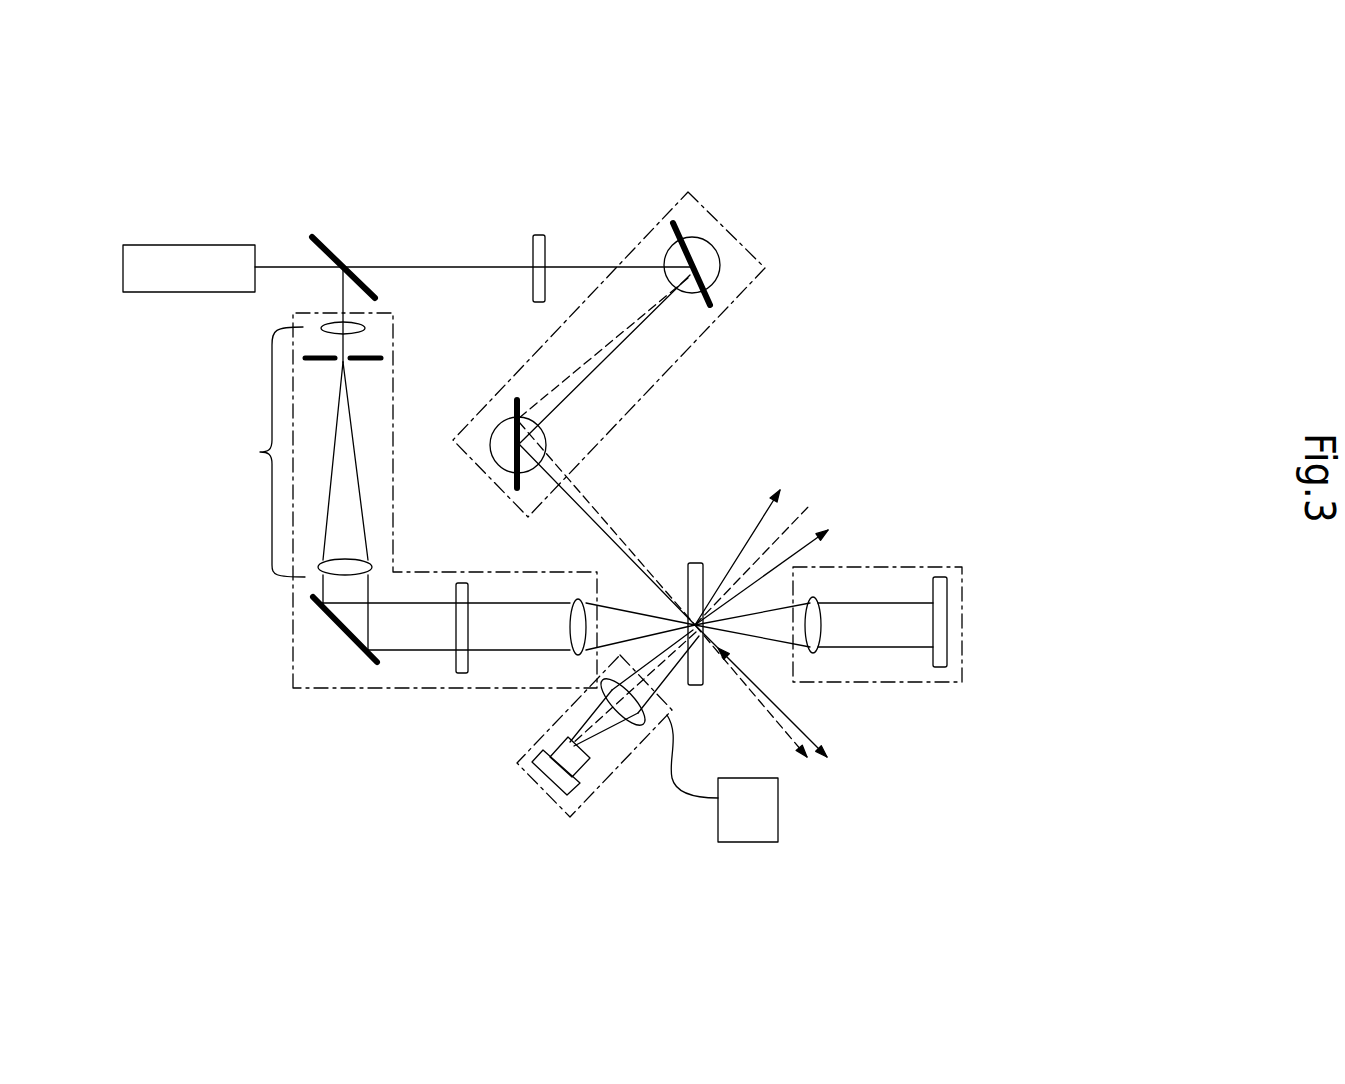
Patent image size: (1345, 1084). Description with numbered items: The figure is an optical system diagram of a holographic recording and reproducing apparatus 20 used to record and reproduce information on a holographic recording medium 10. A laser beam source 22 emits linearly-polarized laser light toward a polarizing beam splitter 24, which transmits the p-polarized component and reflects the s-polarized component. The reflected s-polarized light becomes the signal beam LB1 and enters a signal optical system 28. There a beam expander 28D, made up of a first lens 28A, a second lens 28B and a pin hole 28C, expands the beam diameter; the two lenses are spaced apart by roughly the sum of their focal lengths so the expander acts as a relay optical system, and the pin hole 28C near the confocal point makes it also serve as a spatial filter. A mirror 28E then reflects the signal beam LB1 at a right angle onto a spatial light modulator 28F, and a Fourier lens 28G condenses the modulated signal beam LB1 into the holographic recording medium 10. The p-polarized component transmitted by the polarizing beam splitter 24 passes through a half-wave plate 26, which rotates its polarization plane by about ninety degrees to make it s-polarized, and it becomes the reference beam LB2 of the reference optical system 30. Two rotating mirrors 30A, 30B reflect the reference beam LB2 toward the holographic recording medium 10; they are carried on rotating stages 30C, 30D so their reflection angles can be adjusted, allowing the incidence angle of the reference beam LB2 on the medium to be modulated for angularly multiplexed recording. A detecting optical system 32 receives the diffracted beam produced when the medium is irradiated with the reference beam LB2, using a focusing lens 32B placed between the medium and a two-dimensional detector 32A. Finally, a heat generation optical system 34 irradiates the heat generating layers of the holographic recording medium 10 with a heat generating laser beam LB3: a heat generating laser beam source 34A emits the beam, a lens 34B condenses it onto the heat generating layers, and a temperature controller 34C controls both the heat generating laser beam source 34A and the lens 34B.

The holographic recording medium 10 is at (693, 562).
The holographic recording and reproducing apparatus 20 is at (580, 152).
The laser beam source 22 is at (170, 246).
The polarizing beam splitter 24 is at (327, 236).
The half-wave plate 26 is at (535, 258).
The signal optical system 28 is at (302, 692).
The first lens 28A is at (362, 328).
The second lens 28B is at (372, 565).
The pin hole 28C is at (328, 366).
The beam expander 28D is at (260, 452).
The mirror 28E is at (330, 620).
The spatial light modulator 28F is at (455, 662).
The Fourier lens 28G is at (573, 640).
The reference optical system 30 is at (690, 192).
The rotating mirror 30A is at (700, 245).
The rotating mirror 30B is at (540, 470).
The rotating stage 30C is at (720, 267).
The rotating stage 30D is at (548, 428).
The detecting optical system 32 is at (866, 568).
The two-dimensional detector 32A is at (940, 603).
The focusing lens 32B is at (813, 650).
The heat generation optical system 34 is at (578, 818).
The heat generating laser beam source 34A is at (583, 800).
The lens 34B is at (640, 730).
The temperature controller 34C is at (778, 800).
The signal beam LB1 is at (345, 508).
The reference beam LB2 is at (597, 370).
The heat generating laser beam LB3 is at (660, 673).